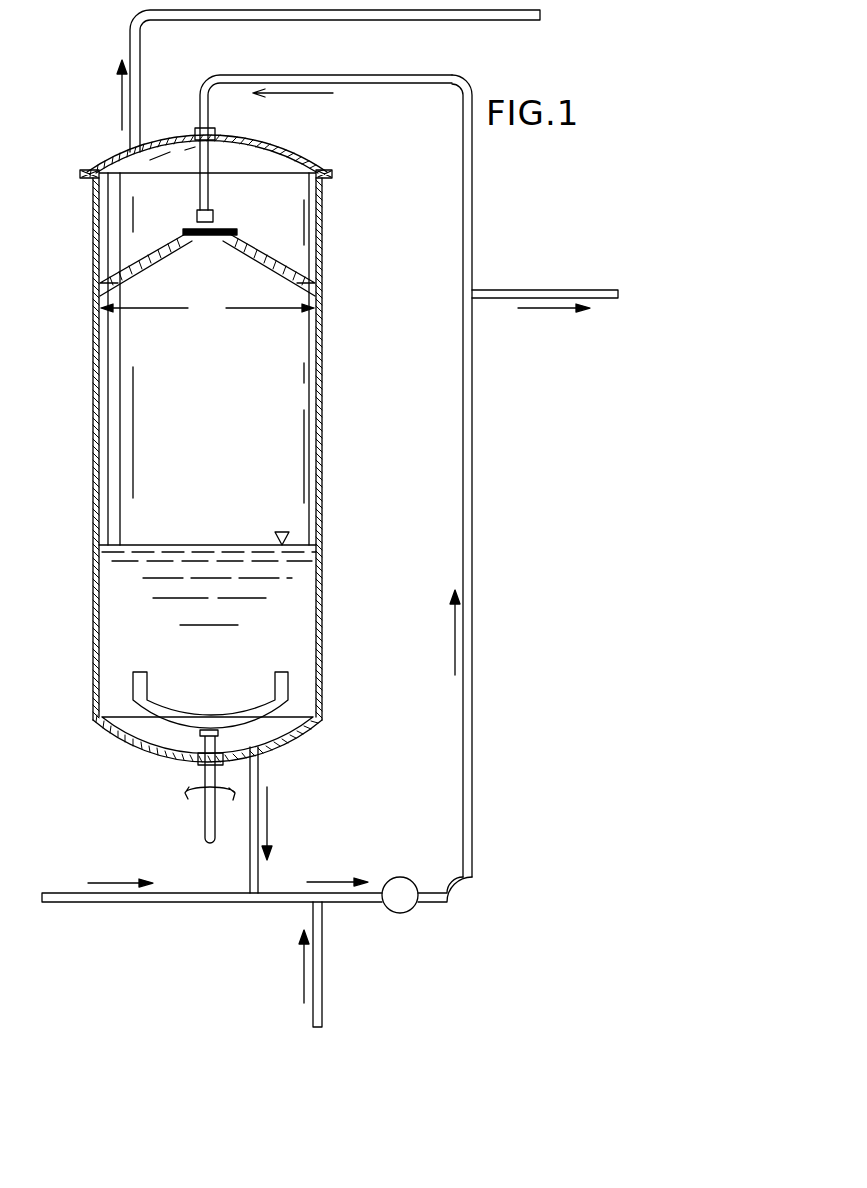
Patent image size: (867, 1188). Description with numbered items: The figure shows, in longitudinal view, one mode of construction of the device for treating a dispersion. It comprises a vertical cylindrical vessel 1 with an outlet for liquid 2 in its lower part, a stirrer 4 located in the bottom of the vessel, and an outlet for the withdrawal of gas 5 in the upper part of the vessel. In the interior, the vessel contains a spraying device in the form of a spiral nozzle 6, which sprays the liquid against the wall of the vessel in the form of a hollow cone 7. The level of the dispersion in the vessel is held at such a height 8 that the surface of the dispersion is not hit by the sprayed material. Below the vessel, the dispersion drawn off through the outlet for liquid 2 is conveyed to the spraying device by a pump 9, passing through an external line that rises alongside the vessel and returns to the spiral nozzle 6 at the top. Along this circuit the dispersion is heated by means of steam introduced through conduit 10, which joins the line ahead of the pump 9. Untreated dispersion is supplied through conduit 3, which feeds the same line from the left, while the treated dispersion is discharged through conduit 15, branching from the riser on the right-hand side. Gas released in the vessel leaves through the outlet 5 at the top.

The vertical cylindrical vessel 1 is at (93, 452).
The outlet for liquid 2 is at (258, 772).
The conduit 3 is at (125, 903).
The stirrer 4 is at (275, 685).
The outlet for the withdrawal of gas 5 is at (140, 62).
The spiral nozzle 6 is at (213, 222).
The hollow cone 7 is at (207, 309).
The height of the dispersion level 8 is at (120, 588).
The pump 9 is at (400, 877).
The conduit 10 is at (322, 966).
The conduit 15 is at (602, 299).